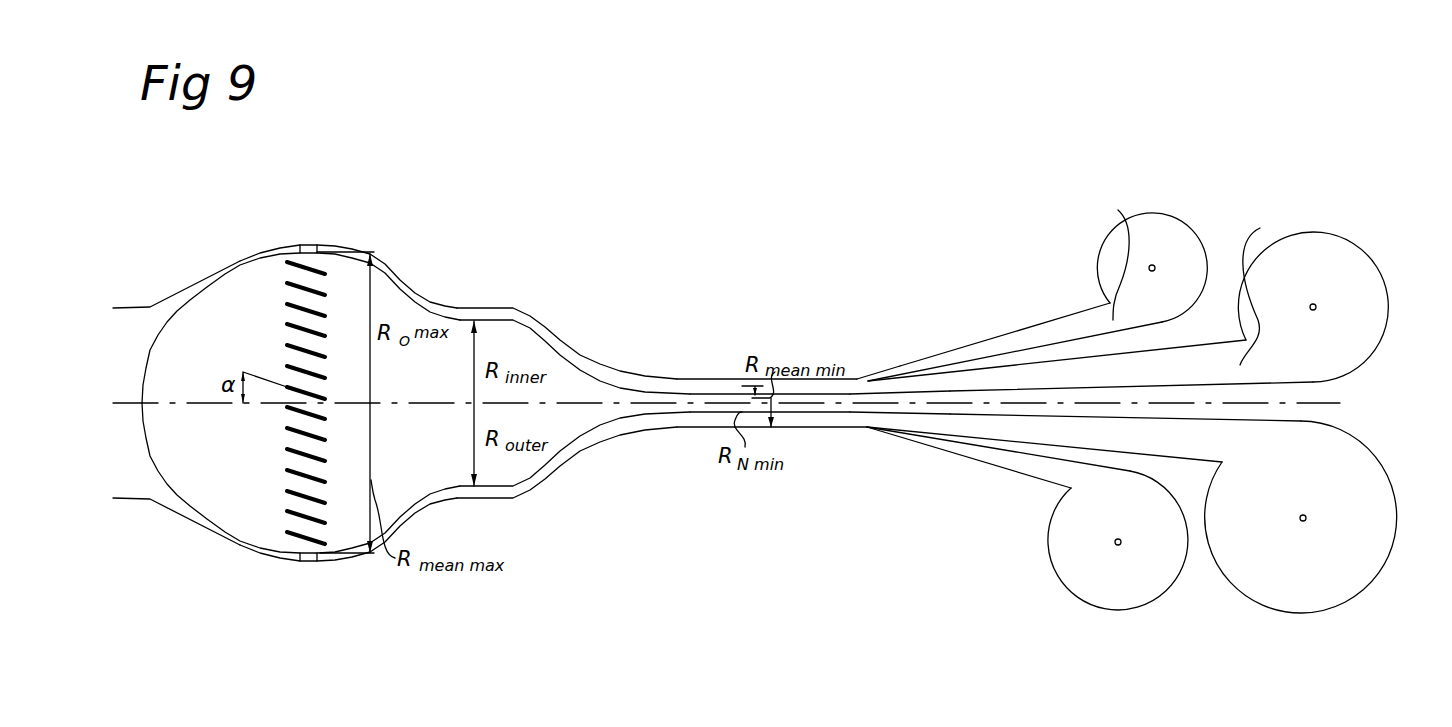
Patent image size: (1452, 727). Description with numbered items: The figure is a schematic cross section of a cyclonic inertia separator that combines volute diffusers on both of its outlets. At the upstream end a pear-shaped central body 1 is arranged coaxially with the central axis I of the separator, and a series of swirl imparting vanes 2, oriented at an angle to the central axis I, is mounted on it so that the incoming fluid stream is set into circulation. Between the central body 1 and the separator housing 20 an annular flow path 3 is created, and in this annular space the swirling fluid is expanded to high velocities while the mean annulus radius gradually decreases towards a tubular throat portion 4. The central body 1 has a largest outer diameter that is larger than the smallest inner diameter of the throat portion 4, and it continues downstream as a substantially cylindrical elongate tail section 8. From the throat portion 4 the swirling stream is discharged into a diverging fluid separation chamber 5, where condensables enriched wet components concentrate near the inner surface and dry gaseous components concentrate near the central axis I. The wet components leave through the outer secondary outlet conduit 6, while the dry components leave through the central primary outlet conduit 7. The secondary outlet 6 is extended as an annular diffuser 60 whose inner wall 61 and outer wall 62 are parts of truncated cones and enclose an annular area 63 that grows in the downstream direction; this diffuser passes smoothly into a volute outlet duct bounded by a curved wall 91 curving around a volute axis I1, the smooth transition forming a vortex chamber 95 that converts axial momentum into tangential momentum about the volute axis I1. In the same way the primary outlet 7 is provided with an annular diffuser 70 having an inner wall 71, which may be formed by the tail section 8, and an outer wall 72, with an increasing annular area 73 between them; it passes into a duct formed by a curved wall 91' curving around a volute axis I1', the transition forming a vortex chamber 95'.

The central body 1 is at (231, 311).
The swirl imparting vanes 2 is at (290, 453).
The annular flow path 3 is at (404, 290).
The separator housing 20 is at (538, 326).
The tubular throat portion 4 is at (672, 384).
The diverging fluid separation chamber 5 is at (866, 418).
The outer secondary outlet conduit 6 is at (890, 375).
The central primary outlet conduit 7 is at (922, 420).
The elongate tail section 8 is at (922, 398).
The annular diffuser 60 is at (958, 450).
The inner wall 61 is at (988, 450).
The outer wall 62 is at (1008, 473).
The annular area 63 is at (1068, 481).
The annular diffuser 70 is at (977, 385).
The inner wall 71 is at (1025, 390).
The outer wall 72 is at (1040, 362).
The annular area 73 is at (1100, 325).
The curved wall 91 is at (1142, 427).
The curved wall 91' is at (1314, 422).
The vortex chamber 95 is at (1116, 253).
The vortex chamber 95' is at (1266, 291).
The central axis I is at (1328, 403).
The volute axis I1 is at (1157, 405).
The volute axis I1' is at (1333, 412).